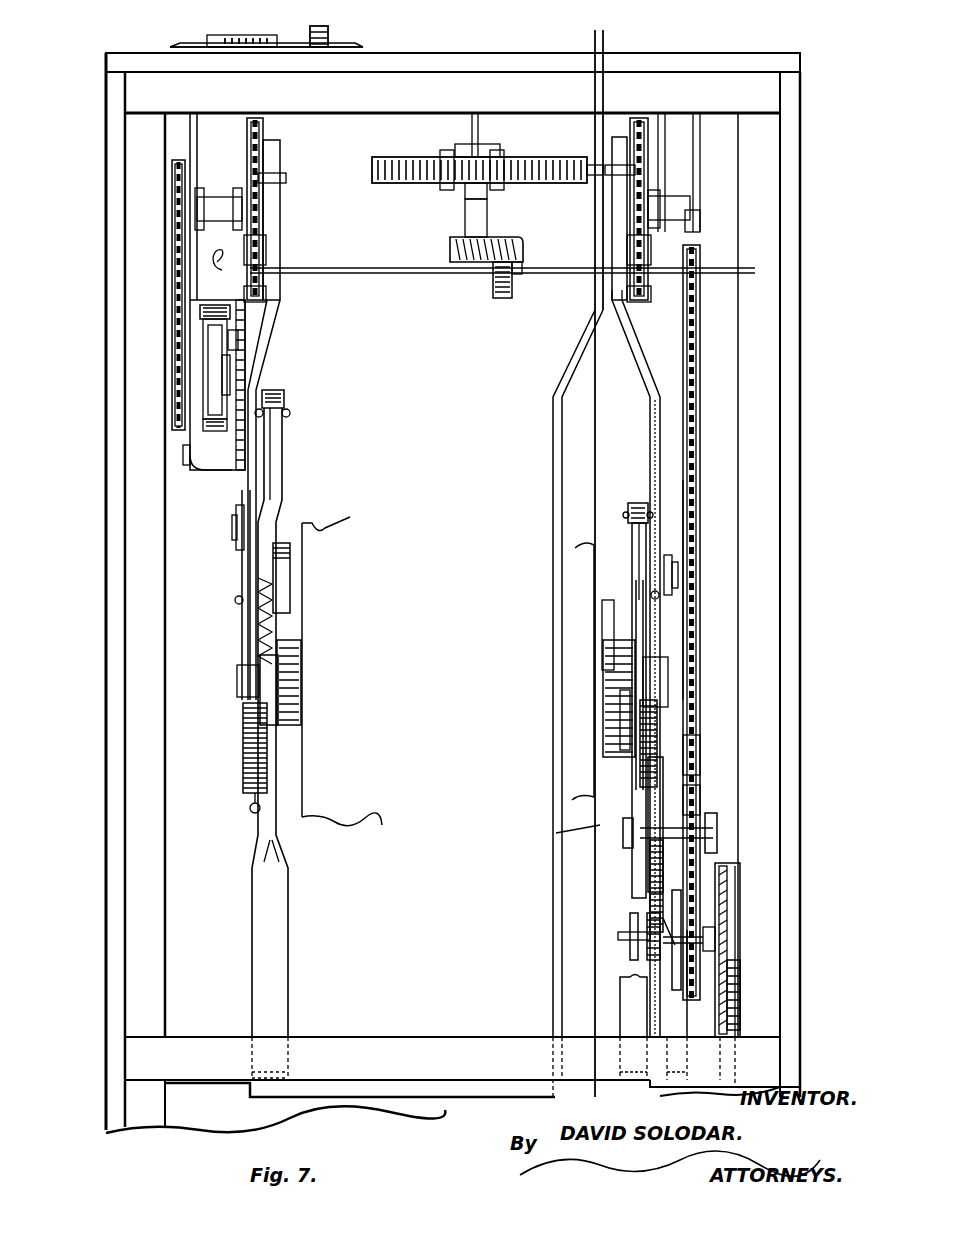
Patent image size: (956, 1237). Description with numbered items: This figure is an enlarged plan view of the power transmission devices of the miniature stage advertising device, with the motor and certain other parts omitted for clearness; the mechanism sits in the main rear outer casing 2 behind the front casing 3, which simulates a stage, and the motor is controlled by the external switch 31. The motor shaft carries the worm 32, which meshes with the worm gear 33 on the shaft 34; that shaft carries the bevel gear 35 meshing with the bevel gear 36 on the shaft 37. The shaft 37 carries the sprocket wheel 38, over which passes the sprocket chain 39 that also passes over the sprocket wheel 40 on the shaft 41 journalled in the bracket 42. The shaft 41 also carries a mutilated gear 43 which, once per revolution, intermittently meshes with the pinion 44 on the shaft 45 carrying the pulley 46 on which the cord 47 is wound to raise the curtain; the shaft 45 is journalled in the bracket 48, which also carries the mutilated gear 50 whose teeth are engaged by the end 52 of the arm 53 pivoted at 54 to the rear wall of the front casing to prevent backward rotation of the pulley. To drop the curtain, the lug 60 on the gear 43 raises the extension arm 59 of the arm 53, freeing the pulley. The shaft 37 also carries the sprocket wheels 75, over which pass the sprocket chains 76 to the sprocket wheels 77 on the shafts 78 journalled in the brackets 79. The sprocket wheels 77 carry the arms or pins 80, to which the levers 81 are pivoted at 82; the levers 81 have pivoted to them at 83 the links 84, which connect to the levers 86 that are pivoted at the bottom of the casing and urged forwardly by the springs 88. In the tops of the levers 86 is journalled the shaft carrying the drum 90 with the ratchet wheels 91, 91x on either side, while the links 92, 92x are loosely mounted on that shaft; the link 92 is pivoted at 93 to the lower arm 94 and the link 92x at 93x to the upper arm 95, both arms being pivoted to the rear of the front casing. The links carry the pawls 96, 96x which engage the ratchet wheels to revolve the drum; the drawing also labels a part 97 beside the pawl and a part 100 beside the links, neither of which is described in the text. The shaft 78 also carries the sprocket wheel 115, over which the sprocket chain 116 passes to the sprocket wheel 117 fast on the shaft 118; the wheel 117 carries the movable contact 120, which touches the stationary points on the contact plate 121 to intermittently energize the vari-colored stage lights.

The main rear outer casing 2 is at (105, 538).
The front casing 3 is at (175, 1132).
The external switch 31 is at (328, 40).
The worm 32 is at (595, 166).
The worm gear 33 is at (420, 172).
The shaft 34 is at (475, 132).
The bevel gear 35 is at (462, 246).
The bevel gear 36 is at (505, 298).
The shaft 37 is at (455, 274).
The sprocket wheel 38 is at (701, 262).
The sprocket chain 39 is at (700, 495).
The sprocket wheel 40 is at (700, 772).
The shaft 41 is at (702, 802).
The bracket 42 is at (706, 835).
The mutilated gear 43 is at (650, 798).
The pinion 44 is at (640, 925).
The shaft 45 is at (708, 932).
The pulley 46 is at (737, 882).
The cord 47 is at (735, 1028).
The bracket 48 is at (630, 928).
The mutilated gear 50 is at (648, 895).
The end of arm 52 is at (640, 962).
The arm 53 is at (722, 1003).
The pivot 54 is at (677, 1070).
The extension arm 59 is at (556, 833).
The lug 60 is at (625, 850).
The sprocket wheels 75 is at (268, 298).
The sprocket chains 76 is at (264, 250).
The sprocket wheels 77 is at (264, 130).
The shafts 78 is at (712, 214).
The brackets 79 is at (237, 198).
The arms or pins 80 is at (286, 178).
The levers 81 is at (262, 350).
The pivot 82 is at (281, 150).
The pivot 83 is at (236, 600).
The links 84 is at (242, 645).
The levers 86 is at (262, 676).
The springs 88 is at (246, 740).
The drum 90 is at (302, 795).
The ratchet wheel 91 is at (280, 656).
The ratchet wheel 91x is at (622, 736).
The link 92 is at (276, 512).
The link 92x is at (620, 560).
The pivot 93 is at (290, 412).
The pivot 93x is at (633, 512).
The lower arm 94 is at (274, 472).
The upper arm 95 is at (631, 542).
The pawl 96 is at (290, 578).
The pawl 96x is at (602, 630).
The spring 97 is at (276, 622).
The stop 100 is at (236, 527).
The sprocket wheel 115 is at (176, 205).
The sprocket chain 116 is at (190, 310).
The sprocket wheel 117 is at (190, 425).
The shaft 118 is at (230, 378).
The movable contact 120 is at (238, 336).
The contact plate 121 is at (246, 372).